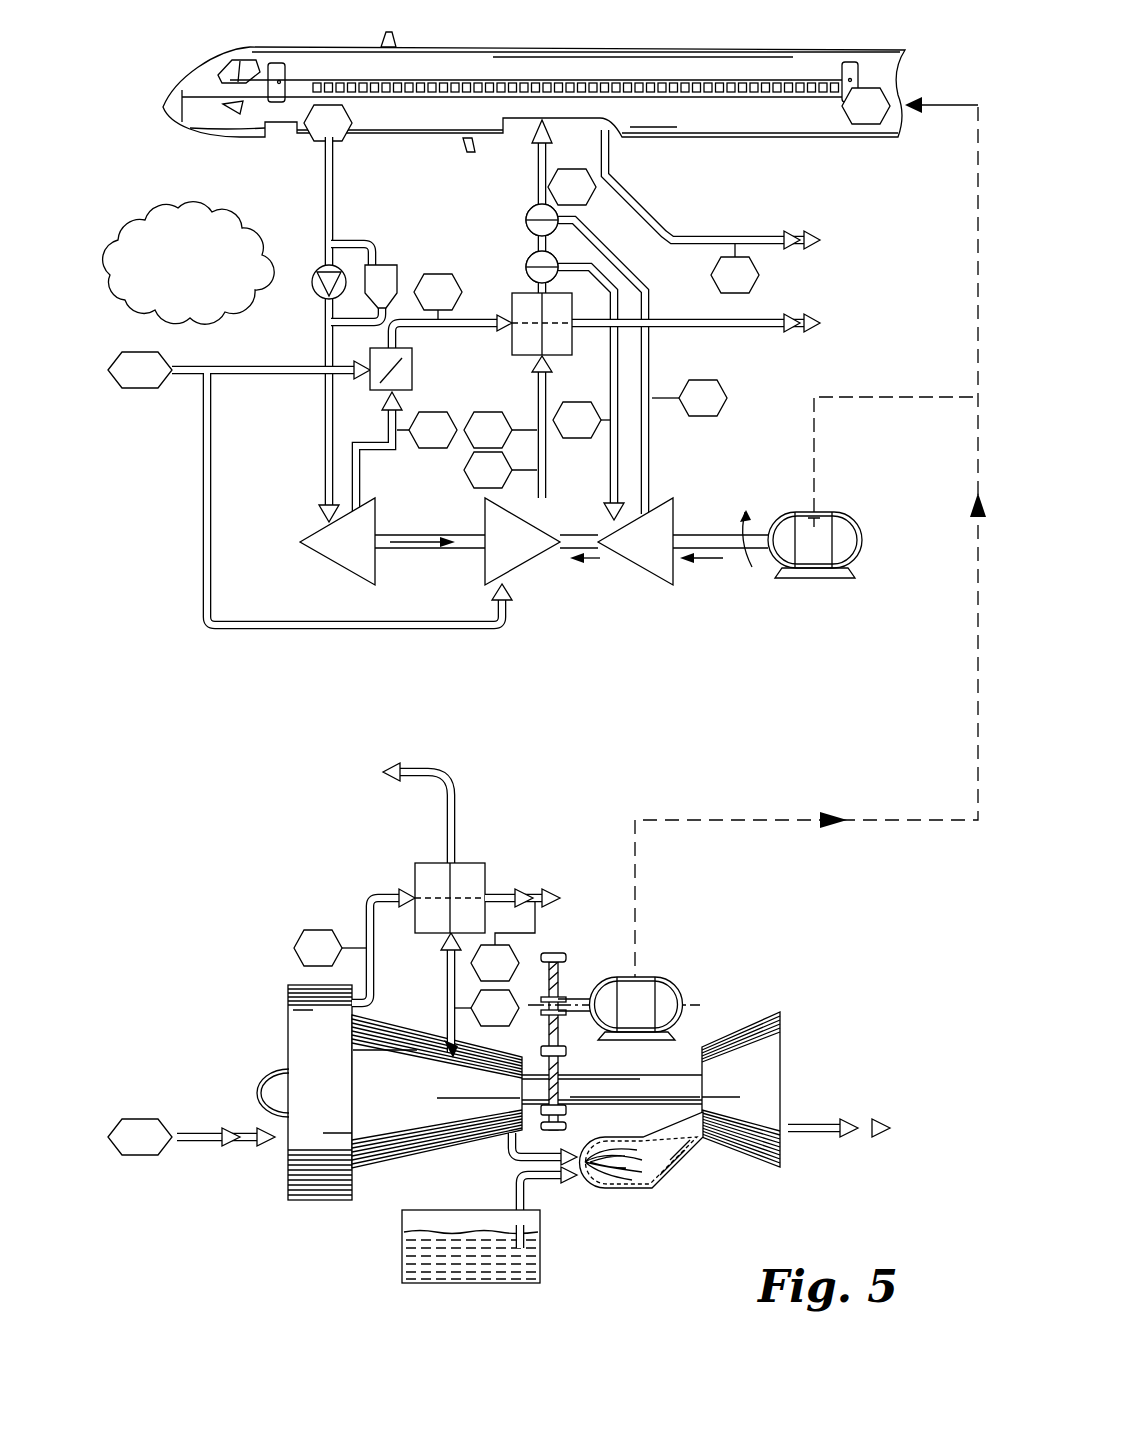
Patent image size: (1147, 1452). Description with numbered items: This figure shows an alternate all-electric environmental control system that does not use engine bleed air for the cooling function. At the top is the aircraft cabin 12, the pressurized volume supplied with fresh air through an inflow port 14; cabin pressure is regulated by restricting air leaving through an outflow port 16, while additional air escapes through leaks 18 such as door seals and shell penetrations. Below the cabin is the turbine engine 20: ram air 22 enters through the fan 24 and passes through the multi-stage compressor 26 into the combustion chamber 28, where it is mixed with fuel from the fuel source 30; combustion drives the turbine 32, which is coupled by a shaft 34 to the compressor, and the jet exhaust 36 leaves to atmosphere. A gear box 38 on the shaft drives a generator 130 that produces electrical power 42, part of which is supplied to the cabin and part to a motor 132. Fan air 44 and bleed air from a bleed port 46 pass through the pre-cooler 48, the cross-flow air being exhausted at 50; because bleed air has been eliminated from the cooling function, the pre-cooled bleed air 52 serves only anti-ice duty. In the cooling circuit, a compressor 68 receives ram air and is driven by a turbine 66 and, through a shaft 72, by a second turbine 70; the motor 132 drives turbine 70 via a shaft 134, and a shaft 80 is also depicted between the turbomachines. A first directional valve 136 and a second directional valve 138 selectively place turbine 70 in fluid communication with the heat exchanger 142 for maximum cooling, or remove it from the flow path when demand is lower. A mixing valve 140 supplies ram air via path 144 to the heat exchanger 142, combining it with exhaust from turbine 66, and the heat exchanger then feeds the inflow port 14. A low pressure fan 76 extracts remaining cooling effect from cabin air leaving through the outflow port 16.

The cabin 12 is at (425, 45).
The inflow port 14 is at (528, 126).
The outflow port 16 is at (313, 146).
The leaks 18 is at (742, 236).
The turbine engine 20 is at (244, 978).
The ram air 22 is at (205, 1130).
The fan 24 is at (312, 1200).
The multi-stage compressor 26 is at (375, 1168).
The combustion chamber 28 is at (672, 1172).
The fuel source 30 is at (540, 1250).
The turbine 32 is at (740, 1030).
The shaft 34 is at (620, 1075).
The jet exhaust 36 is at (812, 1128).
The gear box 38 is at (573, 970).
The electrical power 42 is at (976, 720).
The fan air 44 is at (366, 918).
The bleed port 46 is at (445, 1030).
The pre-cooler 48 is at (470, 863).
The cross-flow air exhaust 50 is at (500, 893).
The anti-ice air 52 is at (422, 778).
The turbine 66 is at (332, 568).
The compressor 68 is at (538, 570).
The second turbine 70 is at (633, 563).
The shaft 72 is at (566, 550).
The low pressure fan 76 is at (400, 281).
The shaft 80 is at (428, 535).
The generator 130 is at (650, 978).
The motor 132 is at (862, 545).
The shaft 134 is at (712, 535).
The first directional valve 136 is at (526, 267).
The second directional valve 138 is at (526, 220).
The mixing valve 140 is at (412, 370).
The heat exchanger 142 is at (518, 356).
The ram air path 144 is at (300, 375).